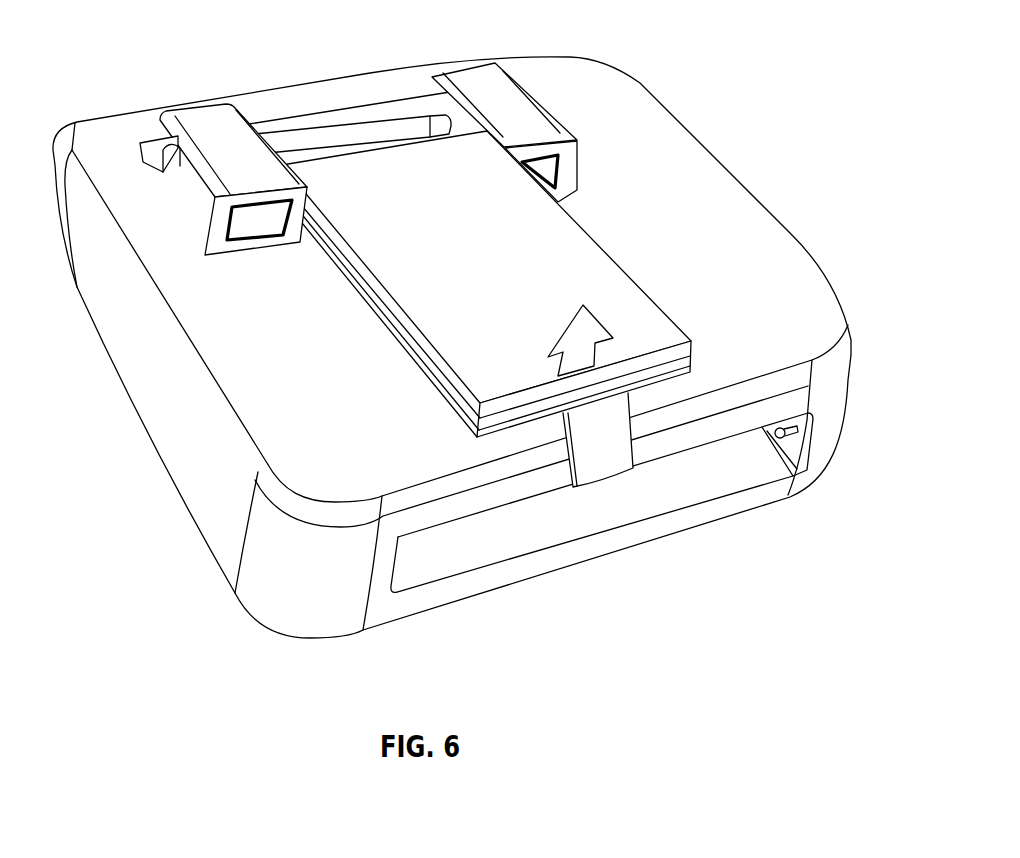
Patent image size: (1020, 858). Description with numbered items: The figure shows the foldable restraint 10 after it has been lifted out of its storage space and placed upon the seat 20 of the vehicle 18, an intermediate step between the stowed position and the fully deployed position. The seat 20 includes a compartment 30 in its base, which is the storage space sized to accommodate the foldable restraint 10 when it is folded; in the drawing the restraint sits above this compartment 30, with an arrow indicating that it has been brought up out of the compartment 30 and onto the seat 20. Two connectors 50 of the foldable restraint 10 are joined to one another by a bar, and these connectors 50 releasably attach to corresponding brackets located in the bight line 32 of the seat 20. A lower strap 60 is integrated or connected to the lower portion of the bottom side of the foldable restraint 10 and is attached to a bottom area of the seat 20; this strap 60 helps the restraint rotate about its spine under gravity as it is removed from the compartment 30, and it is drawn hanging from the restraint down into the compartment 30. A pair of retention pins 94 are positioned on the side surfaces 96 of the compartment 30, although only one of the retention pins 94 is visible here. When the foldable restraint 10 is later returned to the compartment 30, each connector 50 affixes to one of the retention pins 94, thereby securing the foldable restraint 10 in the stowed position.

The foldable restraint 10 is at (705, 338).
The vehicle 18 is at (748, 82).
The seat 20 is at (807, 280).
The compartment 30 is at (683, 485).
The bight line 32 is at (327, 117).
The connectors 50 is at (223, 135).
The lower strap 60 is at (603, 465).
The retention pins 94 is at (800, 474).
The side surfaces 96 is at (803, 443).